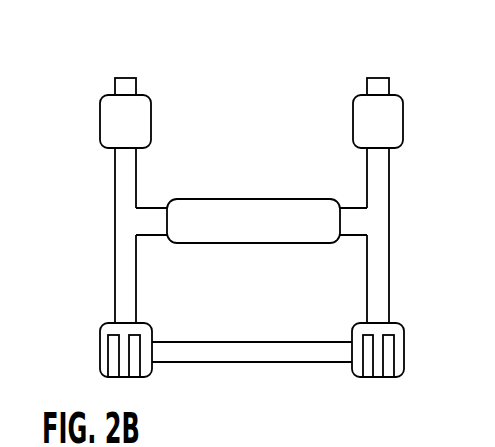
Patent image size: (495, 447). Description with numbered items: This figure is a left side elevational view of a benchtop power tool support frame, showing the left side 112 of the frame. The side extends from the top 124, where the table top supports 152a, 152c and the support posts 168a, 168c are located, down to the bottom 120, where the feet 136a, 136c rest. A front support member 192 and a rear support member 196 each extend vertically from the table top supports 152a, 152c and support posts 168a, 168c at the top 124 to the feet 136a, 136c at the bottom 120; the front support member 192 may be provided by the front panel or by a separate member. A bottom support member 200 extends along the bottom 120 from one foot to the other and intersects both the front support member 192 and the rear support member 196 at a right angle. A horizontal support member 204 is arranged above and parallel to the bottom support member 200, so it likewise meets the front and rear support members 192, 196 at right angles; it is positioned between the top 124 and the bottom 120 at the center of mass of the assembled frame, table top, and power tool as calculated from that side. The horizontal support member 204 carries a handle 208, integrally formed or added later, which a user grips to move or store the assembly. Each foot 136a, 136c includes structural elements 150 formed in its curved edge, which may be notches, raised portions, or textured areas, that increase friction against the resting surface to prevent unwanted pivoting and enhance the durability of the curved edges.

The left side 112 is at (260, 231).
The bottom 120 is at (254, 364).
The top 124 is at (258, 176).
The foot 136a is at (401, 364).
The foot 136c is at (106, 358).
The structural element 150 is at (134, 357).
The table top support 152a is at (379, 85).
The table top support 152c is at (128, 88).
The support post 168a is at (392, 117).
The support post 168c is at (141, 114).
The front support member 192 is at (380, 266).
The rear support member 196 is at (123, 264).
The bottom support member 200 is at (238, 353).
The horizontal support member 204 is at (346, 216).
The handle 208 is at (200, 232).